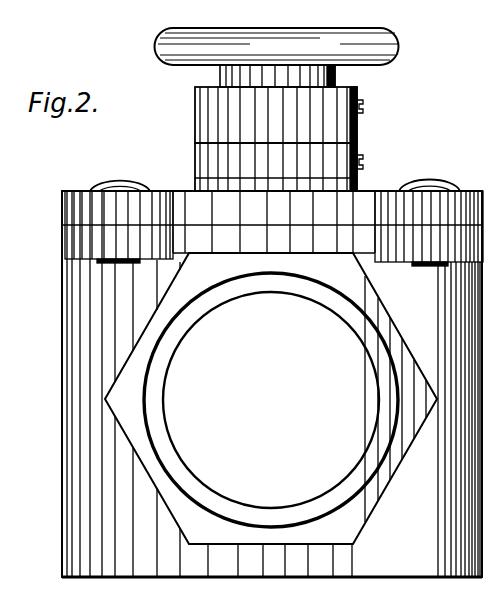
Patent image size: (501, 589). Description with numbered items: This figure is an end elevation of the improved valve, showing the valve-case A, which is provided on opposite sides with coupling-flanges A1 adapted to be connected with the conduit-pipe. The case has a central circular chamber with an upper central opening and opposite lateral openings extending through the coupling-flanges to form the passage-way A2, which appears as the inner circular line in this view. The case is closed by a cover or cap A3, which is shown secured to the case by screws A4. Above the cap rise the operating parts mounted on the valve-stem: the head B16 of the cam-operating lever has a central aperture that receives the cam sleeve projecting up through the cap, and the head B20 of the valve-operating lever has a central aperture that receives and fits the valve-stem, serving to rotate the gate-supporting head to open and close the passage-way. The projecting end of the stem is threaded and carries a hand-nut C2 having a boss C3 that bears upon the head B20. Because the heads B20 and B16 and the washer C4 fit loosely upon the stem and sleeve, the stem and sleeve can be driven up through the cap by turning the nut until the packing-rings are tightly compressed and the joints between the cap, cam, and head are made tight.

The valve-case A is at (70, 372).
The coupling-flanges A1 is at (271, 398).
The passage-way A2 is at (271, 400).
The cap A3 is at (66, 206).
The screws A4 is at (113, 178).
The head B16 is at (195, 160).
The head B20 is at (195, 115).
The hand-nut C2 is at (400, 45).
The boss C3 is at (336, 78).
The washer C4 is at (360, 183).